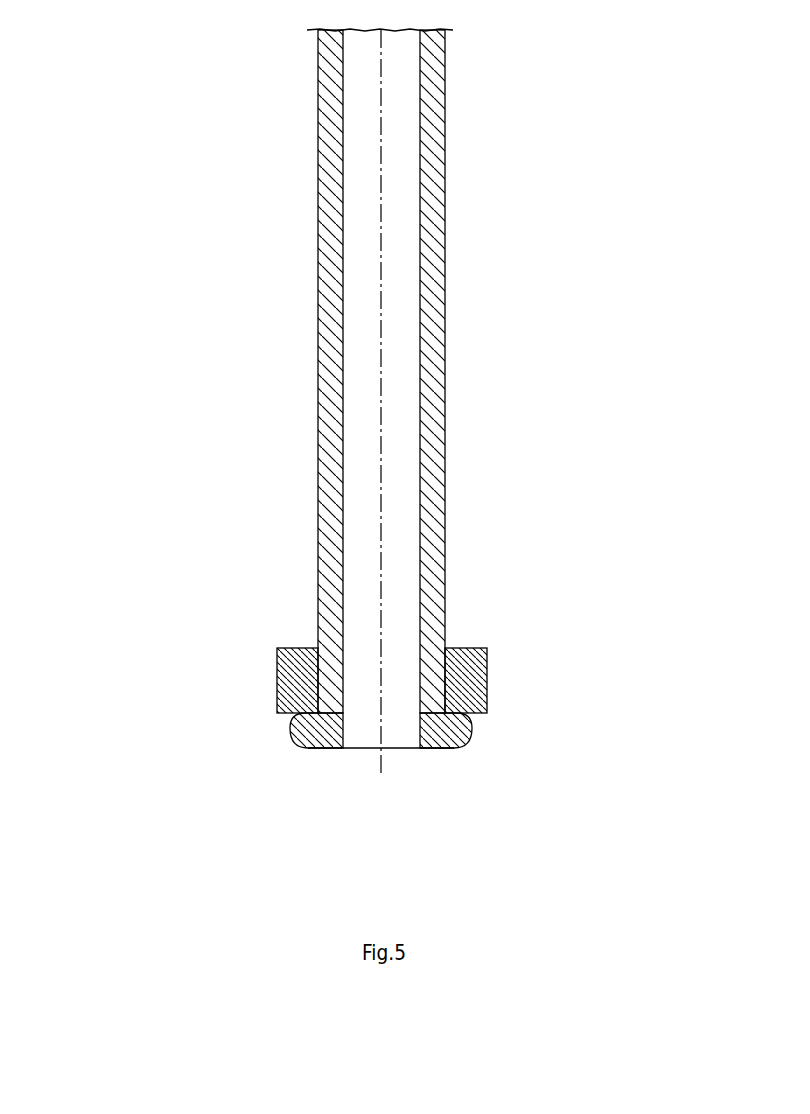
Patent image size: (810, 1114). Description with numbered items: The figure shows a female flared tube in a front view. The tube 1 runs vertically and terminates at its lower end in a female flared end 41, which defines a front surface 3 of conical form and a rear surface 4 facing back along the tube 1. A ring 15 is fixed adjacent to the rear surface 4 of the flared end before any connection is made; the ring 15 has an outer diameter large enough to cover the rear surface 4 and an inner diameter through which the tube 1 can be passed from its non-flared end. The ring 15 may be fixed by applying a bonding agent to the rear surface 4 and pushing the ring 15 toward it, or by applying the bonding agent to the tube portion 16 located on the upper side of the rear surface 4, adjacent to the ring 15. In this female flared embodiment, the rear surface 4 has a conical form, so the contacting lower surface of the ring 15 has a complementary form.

The tube 1 is at (440, 137).
The tube portion 16 is at (318, 668).
The ring 15 is at (480, 675).
The rear surface 4 is at (310, 710).
The female flared end 41 is at (455, 718).
The front surface 3 is at (425, 747).